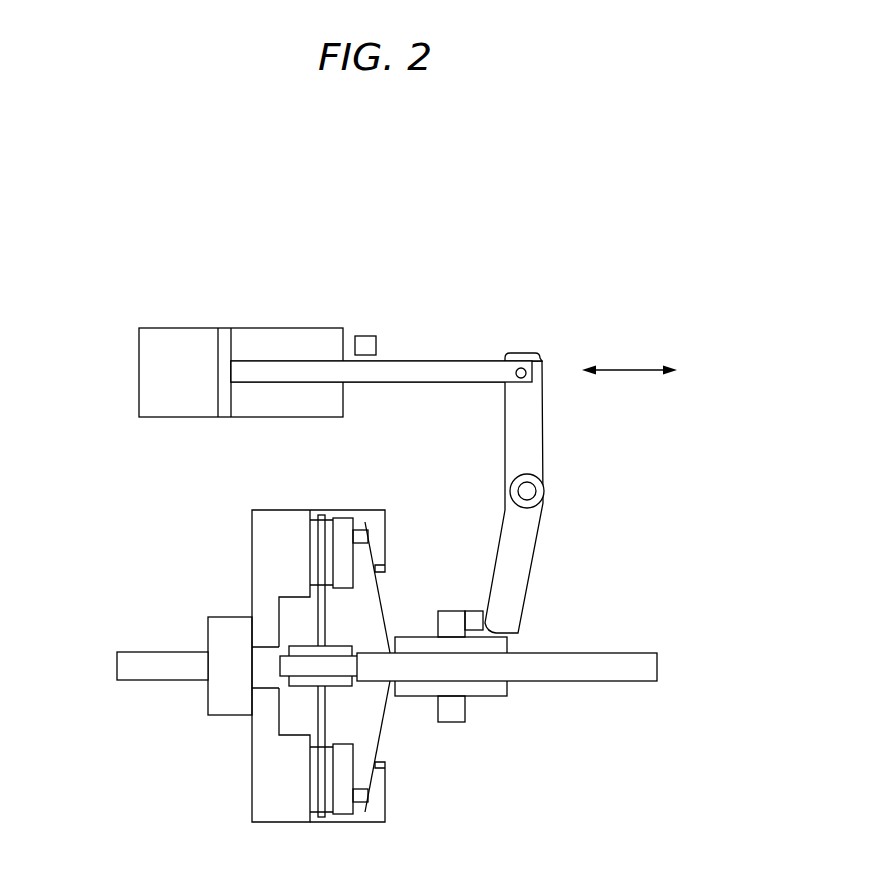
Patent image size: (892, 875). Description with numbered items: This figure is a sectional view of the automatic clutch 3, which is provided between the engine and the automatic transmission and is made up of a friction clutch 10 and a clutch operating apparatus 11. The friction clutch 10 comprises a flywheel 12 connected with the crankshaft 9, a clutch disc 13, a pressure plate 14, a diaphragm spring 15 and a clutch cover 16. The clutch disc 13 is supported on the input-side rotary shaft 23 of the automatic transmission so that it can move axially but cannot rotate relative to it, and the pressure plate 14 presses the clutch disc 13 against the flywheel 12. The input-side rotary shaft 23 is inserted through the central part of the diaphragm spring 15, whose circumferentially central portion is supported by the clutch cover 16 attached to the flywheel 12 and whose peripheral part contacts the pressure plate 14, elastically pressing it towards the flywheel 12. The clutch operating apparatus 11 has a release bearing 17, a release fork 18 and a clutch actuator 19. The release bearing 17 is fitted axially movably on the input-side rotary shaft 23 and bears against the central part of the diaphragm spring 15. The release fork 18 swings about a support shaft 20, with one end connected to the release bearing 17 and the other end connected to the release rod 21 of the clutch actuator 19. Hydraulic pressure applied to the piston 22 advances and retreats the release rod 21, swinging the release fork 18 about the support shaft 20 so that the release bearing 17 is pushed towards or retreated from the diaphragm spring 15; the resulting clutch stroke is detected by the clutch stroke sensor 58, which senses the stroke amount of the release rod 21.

The automatic clutch 3 is at (702, 341).
The crankshaft 9 is at (158, 680).
The friction clutch 10 is at (268, 690).
The clutch operating apparatus 11 is at (287, 372).
The flywheel 12 is at (262, 770).
The clutch disc 13 is at (312, 795).
The pressure plate 14 is at (342, 807).
The diaphragm spring 15 is at (383, 730).
The clutch cover 16 is at (383, 805).
The release bearing 17 is at (488, 688).
The release fork 18 is at (522, 550).
The clutch actuator 19 is at (166, 420).
The support shaft 20 is at (530, 490).
The release rod 21 is at (442, 375).
The piston 22 is at (223, 407).
The input-side rotary shaft 23 is at (625, 668).
The clutch stroke sensor 58 is at (373, 343).